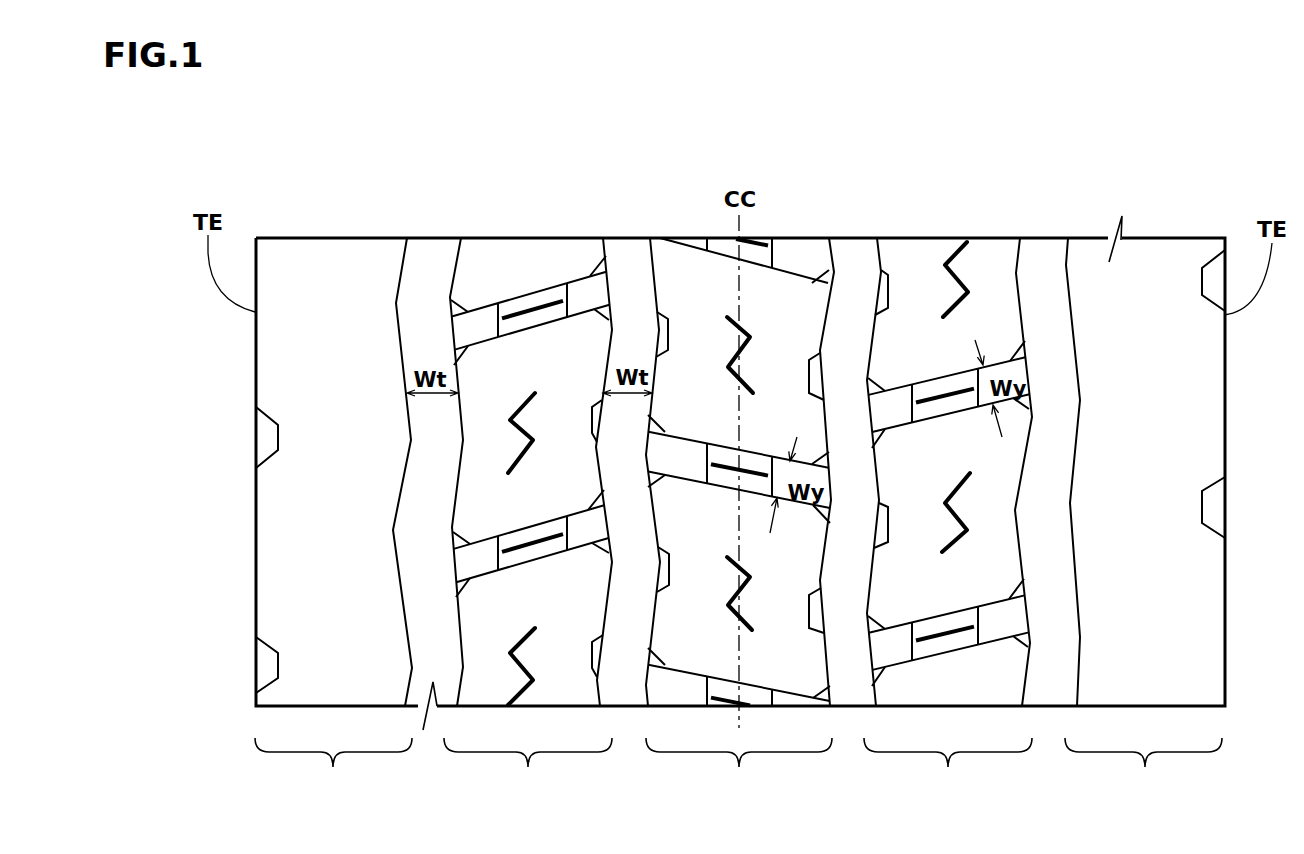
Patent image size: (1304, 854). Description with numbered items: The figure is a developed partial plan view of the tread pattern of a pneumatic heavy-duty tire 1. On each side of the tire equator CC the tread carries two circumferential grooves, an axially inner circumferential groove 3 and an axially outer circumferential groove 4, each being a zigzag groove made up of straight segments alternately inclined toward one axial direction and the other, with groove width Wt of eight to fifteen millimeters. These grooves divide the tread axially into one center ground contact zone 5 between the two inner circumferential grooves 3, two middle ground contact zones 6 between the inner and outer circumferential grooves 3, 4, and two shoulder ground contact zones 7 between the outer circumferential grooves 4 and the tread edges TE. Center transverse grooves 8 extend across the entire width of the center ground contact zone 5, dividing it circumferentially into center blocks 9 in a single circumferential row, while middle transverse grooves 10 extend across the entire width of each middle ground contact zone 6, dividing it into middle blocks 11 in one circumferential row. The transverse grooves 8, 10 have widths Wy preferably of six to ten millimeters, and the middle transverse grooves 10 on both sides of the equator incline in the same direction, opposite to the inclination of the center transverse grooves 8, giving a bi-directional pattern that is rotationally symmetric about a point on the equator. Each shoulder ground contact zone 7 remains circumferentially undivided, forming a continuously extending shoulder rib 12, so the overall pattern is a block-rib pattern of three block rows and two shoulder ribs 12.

The heavy-duty tire 1 is at (1183, 178).
The axially inner circumferential groove 3 is at (622, 258).
The axially outer circumferential groove 4 is at (430, 257).
The center ground contact zone 5 is at (739, 768).
The middle ground contact zone 6 is at (738, 768).
The shoulder ground contact zone 7 is at (333, 603).
The center transverse groove 8 is at (673, 455).
The center block 9 is at (770, 327).
The middle transverse groove 10 is at (892, 412).
The middle block 11 is at (922, 350).
The shoulder rib 12 is at (1145, 524).